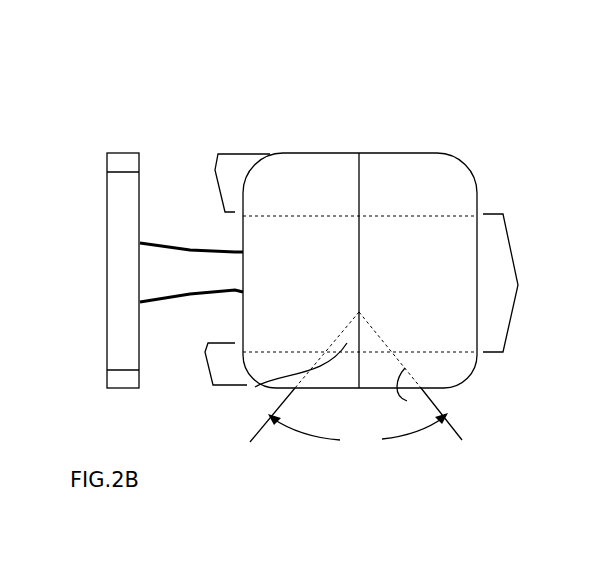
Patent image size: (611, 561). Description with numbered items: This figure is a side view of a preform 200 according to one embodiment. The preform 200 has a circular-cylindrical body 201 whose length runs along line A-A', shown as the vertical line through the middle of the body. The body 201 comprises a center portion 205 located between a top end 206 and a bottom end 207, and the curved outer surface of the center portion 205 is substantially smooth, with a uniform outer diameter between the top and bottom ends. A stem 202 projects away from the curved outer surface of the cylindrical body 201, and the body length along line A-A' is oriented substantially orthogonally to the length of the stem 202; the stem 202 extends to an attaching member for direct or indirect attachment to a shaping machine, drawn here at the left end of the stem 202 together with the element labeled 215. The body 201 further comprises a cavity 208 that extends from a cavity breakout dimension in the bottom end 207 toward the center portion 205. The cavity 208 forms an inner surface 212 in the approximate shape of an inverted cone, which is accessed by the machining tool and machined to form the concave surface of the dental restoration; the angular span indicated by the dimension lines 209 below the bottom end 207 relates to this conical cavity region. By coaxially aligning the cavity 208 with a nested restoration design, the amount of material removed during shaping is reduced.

The preform 200 is at (395, 93).
The circular-cylindrical body 201 is at (455, 152).
The stem 202 is at (178, 245).
The center portion 205 is at (518, 285).
The top end 206 is at (215, 170).
The bottom end 207 is at (205, 352).
The cavity 208 is at (265, 388).
The angular rotation range 209 is at (397, 441).
The inner surface 212 is at (407, 401).
The mounting base plate 215 is at (107, 330).